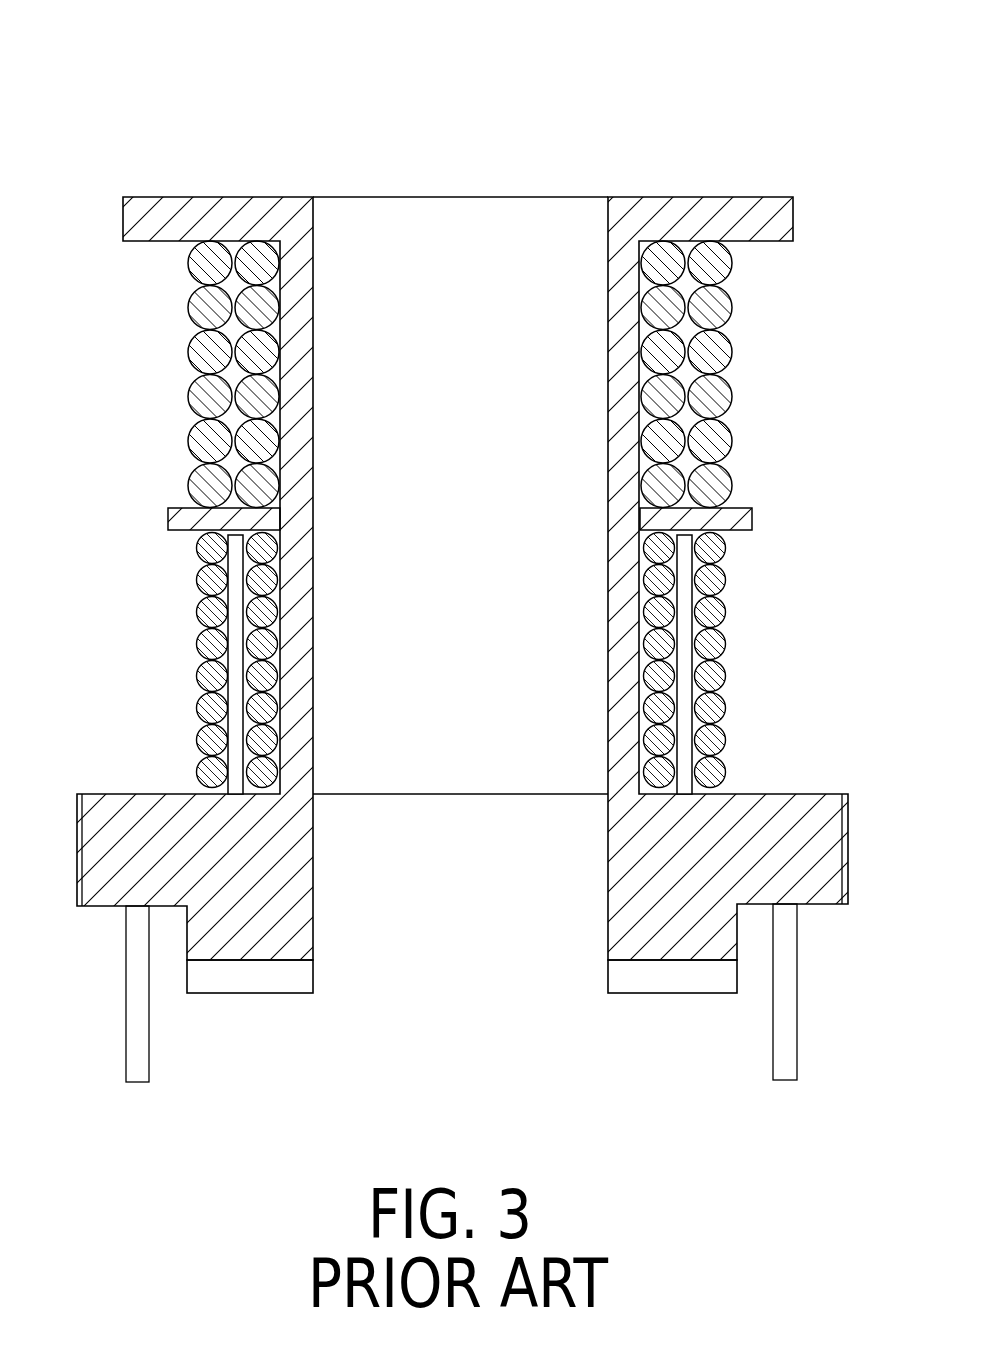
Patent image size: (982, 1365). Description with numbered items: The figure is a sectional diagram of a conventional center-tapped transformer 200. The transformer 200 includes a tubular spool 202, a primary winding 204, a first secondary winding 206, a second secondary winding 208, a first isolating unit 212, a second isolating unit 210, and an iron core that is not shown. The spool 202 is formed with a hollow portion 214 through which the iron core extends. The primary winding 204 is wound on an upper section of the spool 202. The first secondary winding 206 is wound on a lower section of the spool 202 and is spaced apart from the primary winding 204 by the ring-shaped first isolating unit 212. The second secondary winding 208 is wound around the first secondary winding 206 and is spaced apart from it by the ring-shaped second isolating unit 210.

The center-tapped transformer 200 is at (545, 150).
The tubular spool 202 is at (173, 197).
The primary winding 204 is at (257, 260).
The first secondary winding 206 is at (265, 585).
The second secondary winding 208 is at (213, 643).
The second isolating unit 210 is at (683, 613).
The first isolating unit 212 is at (187, 518).
The hollow portion 214 is at (430, 245).